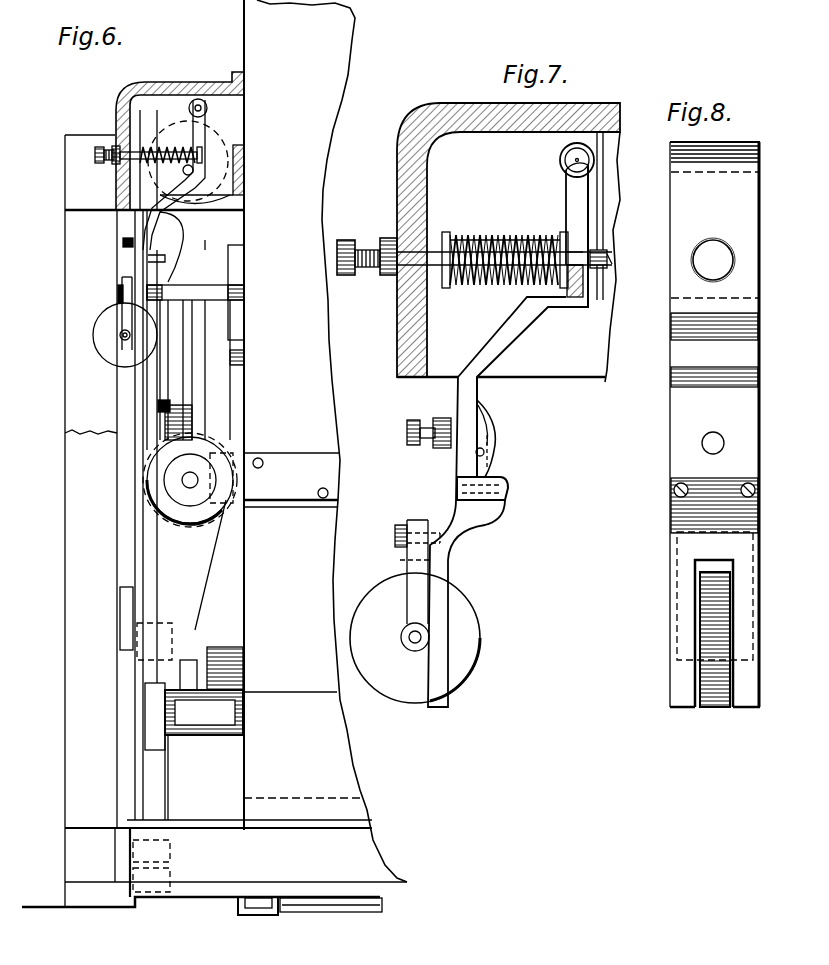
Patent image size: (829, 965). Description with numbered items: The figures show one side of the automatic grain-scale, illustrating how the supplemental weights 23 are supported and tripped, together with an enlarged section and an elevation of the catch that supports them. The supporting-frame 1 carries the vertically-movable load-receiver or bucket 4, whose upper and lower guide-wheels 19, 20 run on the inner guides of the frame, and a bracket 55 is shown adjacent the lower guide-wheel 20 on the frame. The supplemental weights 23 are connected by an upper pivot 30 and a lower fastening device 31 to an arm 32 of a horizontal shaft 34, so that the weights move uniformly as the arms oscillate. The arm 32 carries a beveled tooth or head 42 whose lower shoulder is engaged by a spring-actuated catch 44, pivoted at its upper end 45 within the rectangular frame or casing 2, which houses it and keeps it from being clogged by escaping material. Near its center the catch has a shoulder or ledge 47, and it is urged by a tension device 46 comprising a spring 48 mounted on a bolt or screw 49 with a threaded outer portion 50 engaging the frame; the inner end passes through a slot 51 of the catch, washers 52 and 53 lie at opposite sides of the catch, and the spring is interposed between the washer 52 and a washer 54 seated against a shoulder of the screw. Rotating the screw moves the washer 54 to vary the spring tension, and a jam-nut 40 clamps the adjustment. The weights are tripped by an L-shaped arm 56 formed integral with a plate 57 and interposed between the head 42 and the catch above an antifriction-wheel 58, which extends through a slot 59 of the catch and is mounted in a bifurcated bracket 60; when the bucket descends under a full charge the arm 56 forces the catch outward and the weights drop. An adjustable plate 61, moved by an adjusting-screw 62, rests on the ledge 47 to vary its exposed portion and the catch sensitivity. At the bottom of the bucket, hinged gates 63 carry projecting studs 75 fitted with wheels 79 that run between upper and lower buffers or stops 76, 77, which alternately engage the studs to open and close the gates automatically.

In FIG. 6, the supporting-frame 1 is at (76, 443).
In FIG. 6, the rectangular frame or casing 2 is at (148, 82).
In FIG. 7, the rectangular frame or casing 2 is at (485, 103).
In FIG. 6, the load-receiver or bucket 4 is at (252, 50).
In FIG. 6, the upper guide-wheels 19 is at (212, 130).
In FIG. 6, the lower guide-wheels 20 is at (180, 520).
In FIG. 6, the supplemental weights 23 is at (222, 407).
In FIG. 6, the upper pivot 30 is at (168, 280).
In FIG. 6, the lower fastening device 31 is at (160, 408).
In FIG. 6, the arm 32 is at (210, 246).
In FIG. 6, the shaft 34 is at (247, 360).
In FIG. 6, the jam-nut 40 is at (108, 170).
In FIG. 7, the jam-nut 40 is at (380, 278).
In FIG. 6, the beveled tooth or head 42 is at (180, 242).
In FIG. 6, the spring-actuated catch 44 is at (133, 263).
In FIG. 7, the spring-actuated catch 44 is at (477, 392).
In FIG. 8, the spring-actuated catch 44 is at (673, 420).
In FIG. 6, the upper end of catch 45 is at (196, 99).
In FIG. 7, the upper end of catch 45 is at (562, 162).
In FIG. 6, the tension device 46 is at (175, 140).
In FIG. 7, the tension device 46 is at (501, 248).
In FIG. 6, the shoulder or ledge 47 is at (122, 243).
In FIG. 7, the shoulder or ledge 47 is at (500, 480).
In FIG. 7, the spring 48 is at (490, 286).
In FIG. 6, the bolt or screw 49 is at (240, 152).
In FIG. 7, the bolt or screw 49 is at (605, 235).
In FIG. 6, the threaded outer portion 50 is at (113, 147).
In FIG. 7, the threaded outer portion 50 is at (370, 248).
In FIG. 7, the slot 51 is at (567, 238).
In FIG. 8, the slot 51 is at (710, 250).
In FIG. 7, the washer 52 is at (568, 250).
In FIG. 7, the washer 53 is at (600, 272).
In FIG. 7, the washer 54 is at (447, 288).
In FIG. 6, the bracket 55 is at (244, 470).
In FIG. 6, the L-shaped arm 56 is at (135, 296).
In FIG. 6, the plate 57 is at (242, 272).
In FIG. 6, the antifriction-wheel 58 is at (106, 352).
In FIG. 7, the antifriction-wheel 58 is at (470, 632).
In FIG. 8, the antifriction-wheel 58 is at (712, 707).
In FIG. 7, the slot 59 is at (410, 560).
In FIG. 8, the slot 59 is at (697, 598).
In FIG. 6, the bracket 60 is at (122, 318).
In FIG. 7, the bracket 60 is at (412, 610).
In FIG. 8, the bracket 60 is at (675, 612).
In FIG. 6, the adjustable plate 61 is at (140, 222).
In FIG. 7, the adjustable plate 61 is at (498, 433).
In FIG. 7, the adjusting-screw 62 is at (408, 445).
In FIG. 6, the hinged gates 63 is at (296, 912).
In FIG. 6, the projecting studs 75 is at (190, 740).
In FIG. 6, the upper buffers or stops 76 is at (165, 673).
In FIG. 6, the lower buffers or stops 77 is at (170, 860).
In FIG. 6, the wheels 79 is at (168, 750).